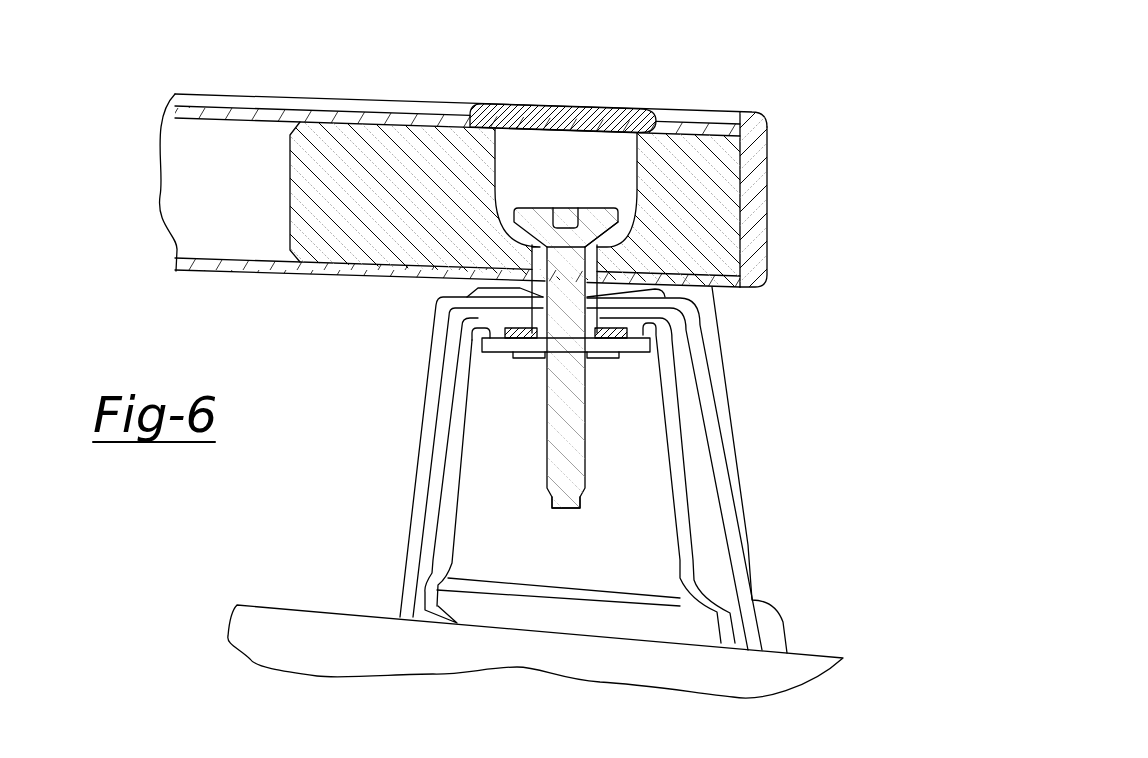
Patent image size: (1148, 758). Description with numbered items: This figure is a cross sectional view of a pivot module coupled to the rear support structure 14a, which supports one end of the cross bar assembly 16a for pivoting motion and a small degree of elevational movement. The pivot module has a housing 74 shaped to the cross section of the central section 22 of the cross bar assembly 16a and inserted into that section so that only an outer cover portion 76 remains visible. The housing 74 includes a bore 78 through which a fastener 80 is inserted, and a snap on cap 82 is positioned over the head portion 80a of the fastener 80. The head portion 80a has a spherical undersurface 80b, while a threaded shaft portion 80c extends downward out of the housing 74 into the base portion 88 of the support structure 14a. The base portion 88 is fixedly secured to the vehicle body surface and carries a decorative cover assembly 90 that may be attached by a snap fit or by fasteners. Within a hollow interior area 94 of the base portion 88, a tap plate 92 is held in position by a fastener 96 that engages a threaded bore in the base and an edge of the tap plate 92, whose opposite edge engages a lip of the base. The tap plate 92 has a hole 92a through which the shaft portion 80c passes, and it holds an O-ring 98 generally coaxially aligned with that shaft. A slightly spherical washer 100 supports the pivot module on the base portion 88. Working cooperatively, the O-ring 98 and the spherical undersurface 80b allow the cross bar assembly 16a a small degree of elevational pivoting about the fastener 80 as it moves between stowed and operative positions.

The rear support structure 14a is at (390, 515).
The cross bar assembly 16a is at (253, 85).
The central section 22 is at (330, 109).
The housing 74 is at (328, 242).
The outer cover portion 76 is at (768, 190).
The bore 78 is at (527, 158).
The snap on cap 82 is at (608, 118).
The fastener 80 is at (597, 435).
The head portion 80a is at (535, 213).
The spherical undersurface 80b is at (617, 231).
The shaft portion 80c is at (565, 489).
The spherical washer 100 is at (530, 287).
The O-ring 98 is at (513, 333).
The decorative cover assembly 90 is at (714, 327).
The base portion 88 is at (728, 518).
The hollow interior area 94 is at (528, 458).
The tap plate 92 is at (482, 343).
The fastener 96 is at (527, 357).
The hole 92a is at (572, 350).